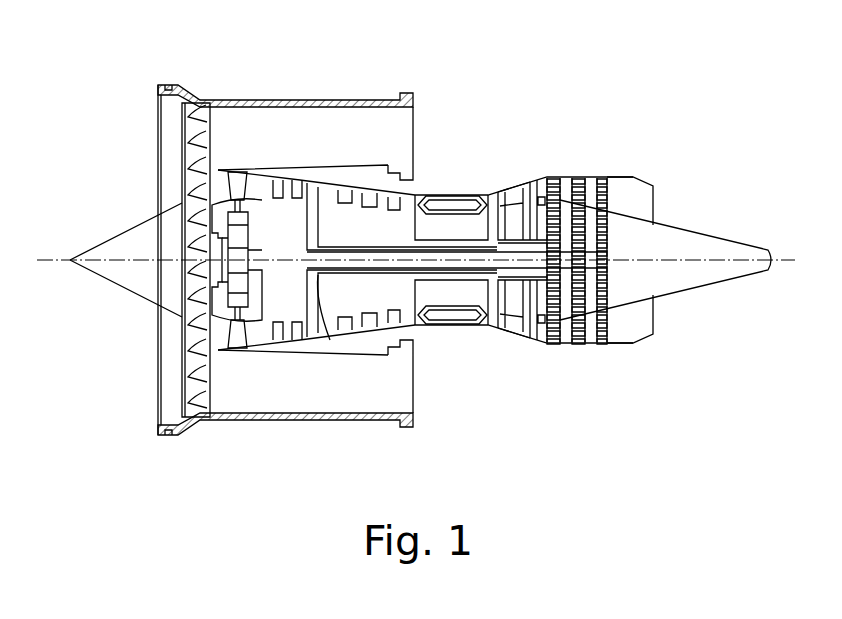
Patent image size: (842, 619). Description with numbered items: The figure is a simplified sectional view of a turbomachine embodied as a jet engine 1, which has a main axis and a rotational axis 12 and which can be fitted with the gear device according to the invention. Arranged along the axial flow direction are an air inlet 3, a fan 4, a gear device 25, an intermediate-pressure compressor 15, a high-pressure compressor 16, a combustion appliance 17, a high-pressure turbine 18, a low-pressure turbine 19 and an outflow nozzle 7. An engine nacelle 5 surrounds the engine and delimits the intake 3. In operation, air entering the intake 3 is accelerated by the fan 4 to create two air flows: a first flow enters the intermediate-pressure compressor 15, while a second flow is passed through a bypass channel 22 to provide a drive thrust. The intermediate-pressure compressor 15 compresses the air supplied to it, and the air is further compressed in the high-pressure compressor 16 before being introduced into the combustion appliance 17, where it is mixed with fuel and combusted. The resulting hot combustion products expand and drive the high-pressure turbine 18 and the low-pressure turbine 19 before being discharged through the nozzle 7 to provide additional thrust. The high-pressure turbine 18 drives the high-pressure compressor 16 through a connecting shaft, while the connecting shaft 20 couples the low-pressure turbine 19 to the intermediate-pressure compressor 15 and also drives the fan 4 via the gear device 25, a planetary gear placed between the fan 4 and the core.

The jet engine 1 is at (655, 105).
The air inlet 3 is at (136, 123).
The fan 4 is at (193, 382).
The engine nacelle 5 is at (353, 100).
The outflow nozzle 7 is at (647, 208).
The rotational axis 12 is at (54, 258).
The intermediate-pressure compressor 15 is at (297, 182).
The high-pressure compressor 16 is at (405, 215).
The combustion appliance 17 is at (453, 315).
The high-pressure turbine 18 is at (533, 192).
The low-pressure turbine 19 is at (576, 182).
The connecting shaft 20 is at (310, 277).
The bypass channel 22 is at (405, 125).
The gear device 25 is at (228, 347).